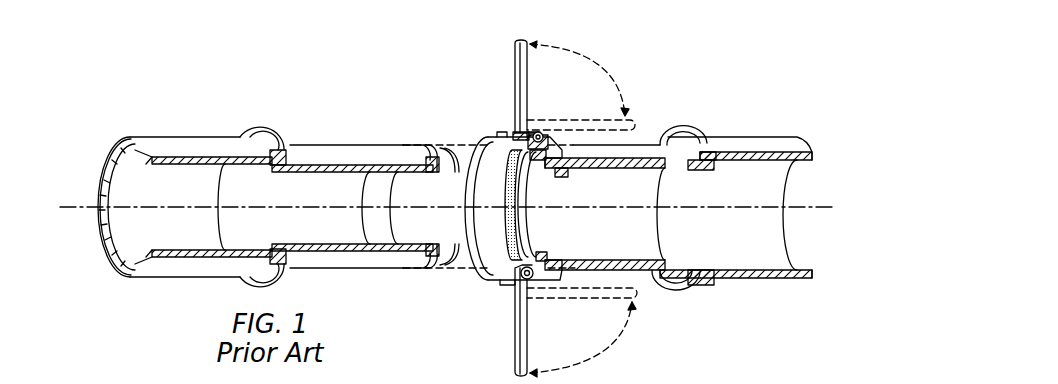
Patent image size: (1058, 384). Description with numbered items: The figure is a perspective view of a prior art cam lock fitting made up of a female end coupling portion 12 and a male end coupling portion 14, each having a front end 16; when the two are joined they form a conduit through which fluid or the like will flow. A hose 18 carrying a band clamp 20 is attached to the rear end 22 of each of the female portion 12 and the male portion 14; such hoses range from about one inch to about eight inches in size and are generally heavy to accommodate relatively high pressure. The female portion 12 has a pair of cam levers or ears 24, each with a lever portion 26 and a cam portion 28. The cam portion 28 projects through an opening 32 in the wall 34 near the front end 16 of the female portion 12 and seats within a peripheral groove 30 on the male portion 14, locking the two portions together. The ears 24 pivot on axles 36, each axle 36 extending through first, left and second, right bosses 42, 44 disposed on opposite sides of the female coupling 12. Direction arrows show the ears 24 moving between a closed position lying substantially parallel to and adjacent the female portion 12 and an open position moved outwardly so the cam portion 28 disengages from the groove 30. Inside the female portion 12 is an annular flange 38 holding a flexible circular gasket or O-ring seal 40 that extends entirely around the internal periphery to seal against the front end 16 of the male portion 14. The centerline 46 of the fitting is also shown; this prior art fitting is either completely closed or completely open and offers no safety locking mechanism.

The female end coupling portion 12 is at (605, 182).
The male end coupling portion 14 is at (338, 145).
The front end 16 is at (449, 163).
The hose 18 is at (194, 142).
The band clamp 20 is at (257, 133).
The rear end 22 is at (223, 185).
The cam lever 24 is at (528, 77).
The lever portion 26 is at (530, 46).
The cam portion 28 is at (540, 255).
The peripheral groove 30 is at (417, 150).
The opening 32 is at (520, 181).
The wall 34 is at (614, 262).
The axle 36 is at (540, 134).
The annular flange 38 is at (562, 168).
The O-ring seal 40 is at (520, 237).
The first boss 42 is at (517, 132).
The second boss 44 is at (480, 160).
The centerline 46 is at (93, 207).